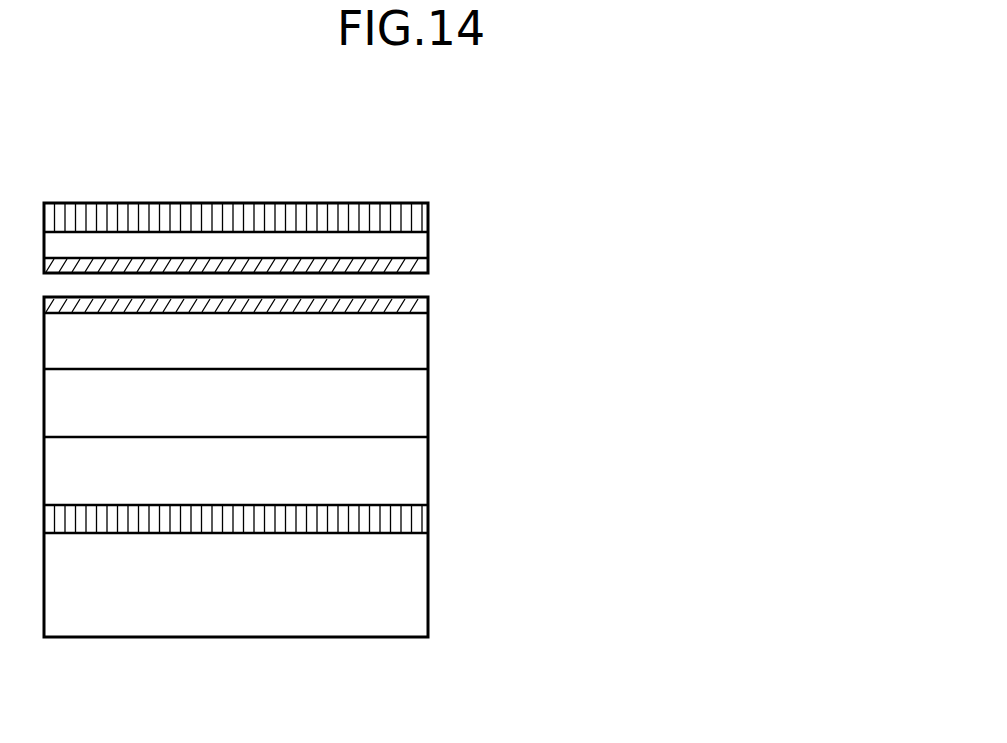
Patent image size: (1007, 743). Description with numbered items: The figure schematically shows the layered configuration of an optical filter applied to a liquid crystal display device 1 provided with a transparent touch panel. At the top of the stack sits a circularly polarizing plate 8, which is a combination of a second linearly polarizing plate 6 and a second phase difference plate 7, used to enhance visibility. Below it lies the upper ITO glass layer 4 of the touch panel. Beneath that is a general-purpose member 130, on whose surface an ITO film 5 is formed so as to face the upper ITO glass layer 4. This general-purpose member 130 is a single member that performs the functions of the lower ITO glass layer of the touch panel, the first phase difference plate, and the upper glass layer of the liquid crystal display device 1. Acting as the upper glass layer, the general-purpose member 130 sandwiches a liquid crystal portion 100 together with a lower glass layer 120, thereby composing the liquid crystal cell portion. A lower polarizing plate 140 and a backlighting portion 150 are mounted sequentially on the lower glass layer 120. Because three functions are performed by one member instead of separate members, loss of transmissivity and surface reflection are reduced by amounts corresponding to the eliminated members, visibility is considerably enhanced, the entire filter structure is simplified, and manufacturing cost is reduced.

The circularly polarizing plate 8 is at (430, 216).
The second linearly polarizing plate 6 is at (497, 238).
The second phase difference plate 7 is at (408, 236).
The upper ITO glass layer 4 is at (428, 249).
The ITO film 5 is at (428, 258).
The general-purpose member 130 is at (428, 345).
The liquid crystal portion 100 is at (428, 396).
The lower glass layer 120 is at (428, 450).
The lower polarizing plate 140 is at (428, 523).
The backlighting portion 150 is at (428, 605).
The liquid crystal display device 1 is at (805, 355).